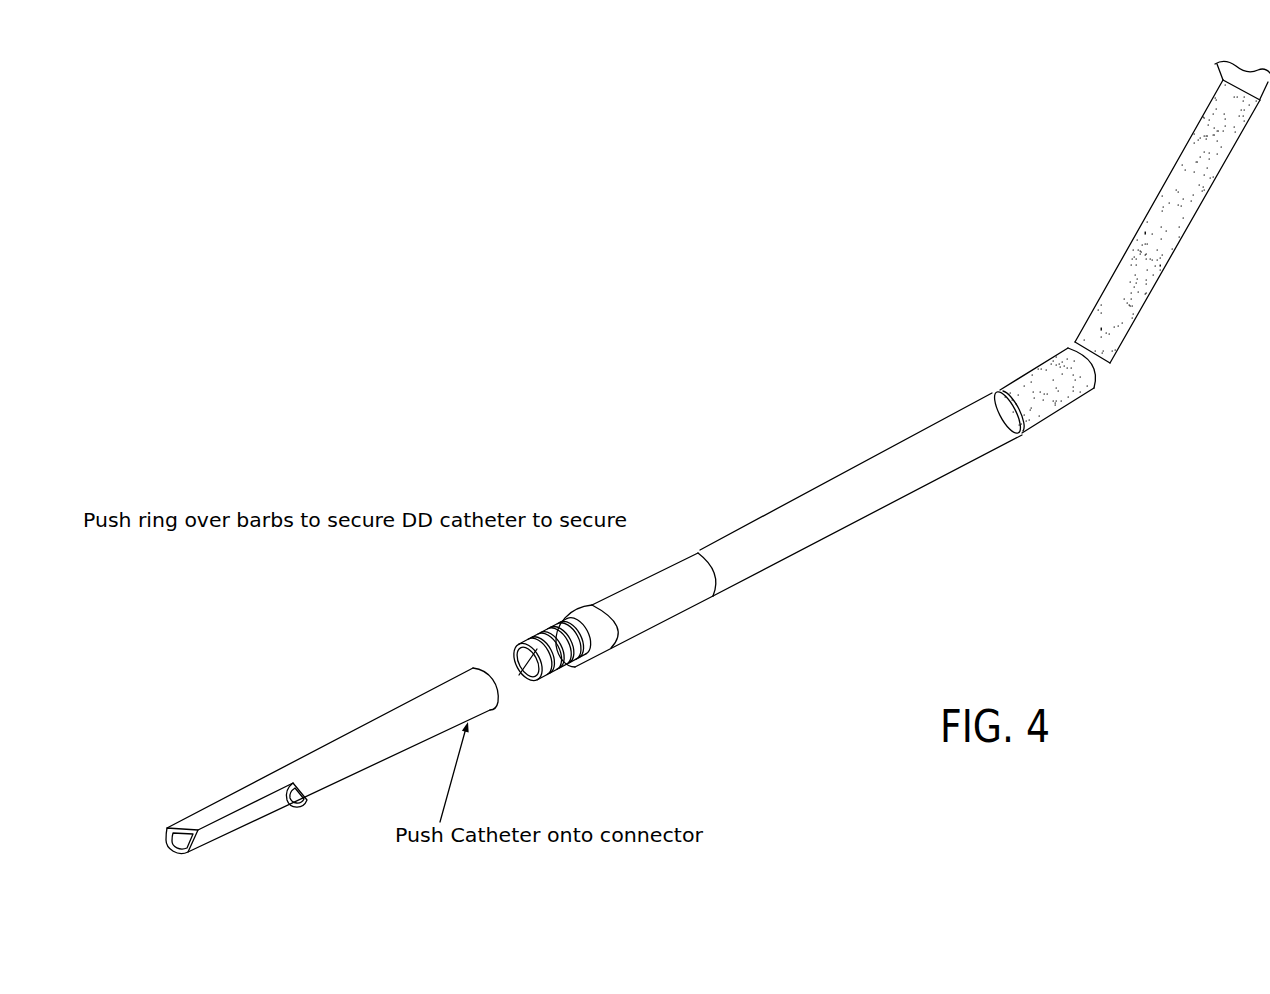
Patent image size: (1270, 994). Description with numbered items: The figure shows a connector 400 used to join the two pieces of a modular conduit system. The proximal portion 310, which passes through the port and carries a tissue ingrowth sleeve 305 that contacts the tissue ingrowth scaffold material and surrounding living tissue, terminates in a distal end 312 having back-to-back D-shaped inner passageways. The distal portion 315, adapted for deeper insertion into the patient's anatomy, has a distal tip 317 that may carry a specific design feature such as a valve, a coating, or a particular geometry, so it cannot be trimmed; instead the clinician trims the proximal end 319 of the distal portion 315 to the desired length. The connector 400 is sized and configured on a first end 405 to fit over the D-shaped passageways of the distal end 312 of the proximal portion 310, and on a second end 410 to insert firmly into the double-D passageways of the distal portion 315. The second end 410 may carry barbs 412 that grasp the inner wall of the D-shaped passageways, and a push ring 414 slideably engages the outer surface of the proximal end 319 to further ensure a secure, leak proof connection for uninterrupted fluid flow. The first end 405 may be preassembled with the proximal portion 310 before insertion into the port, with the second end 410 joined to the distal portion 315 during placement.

The tissue ingrowth sleeve 305 is at (1142, 244).
The proximal portion 310 is at (872, 504).
The distal end 312 is at (788, 557).
The distal portion 315 is at (412, 746).
The distal tip 317 is at (206, 814).
The proximal end 319 is at (482, 668).
The connector 400 is at (678, 606).
The first end 405 is at (690, 560).
The second end 410 is at (524, 627).
The barbs 412 is at (558, 678).
The push ring 414 is at (576, 600).